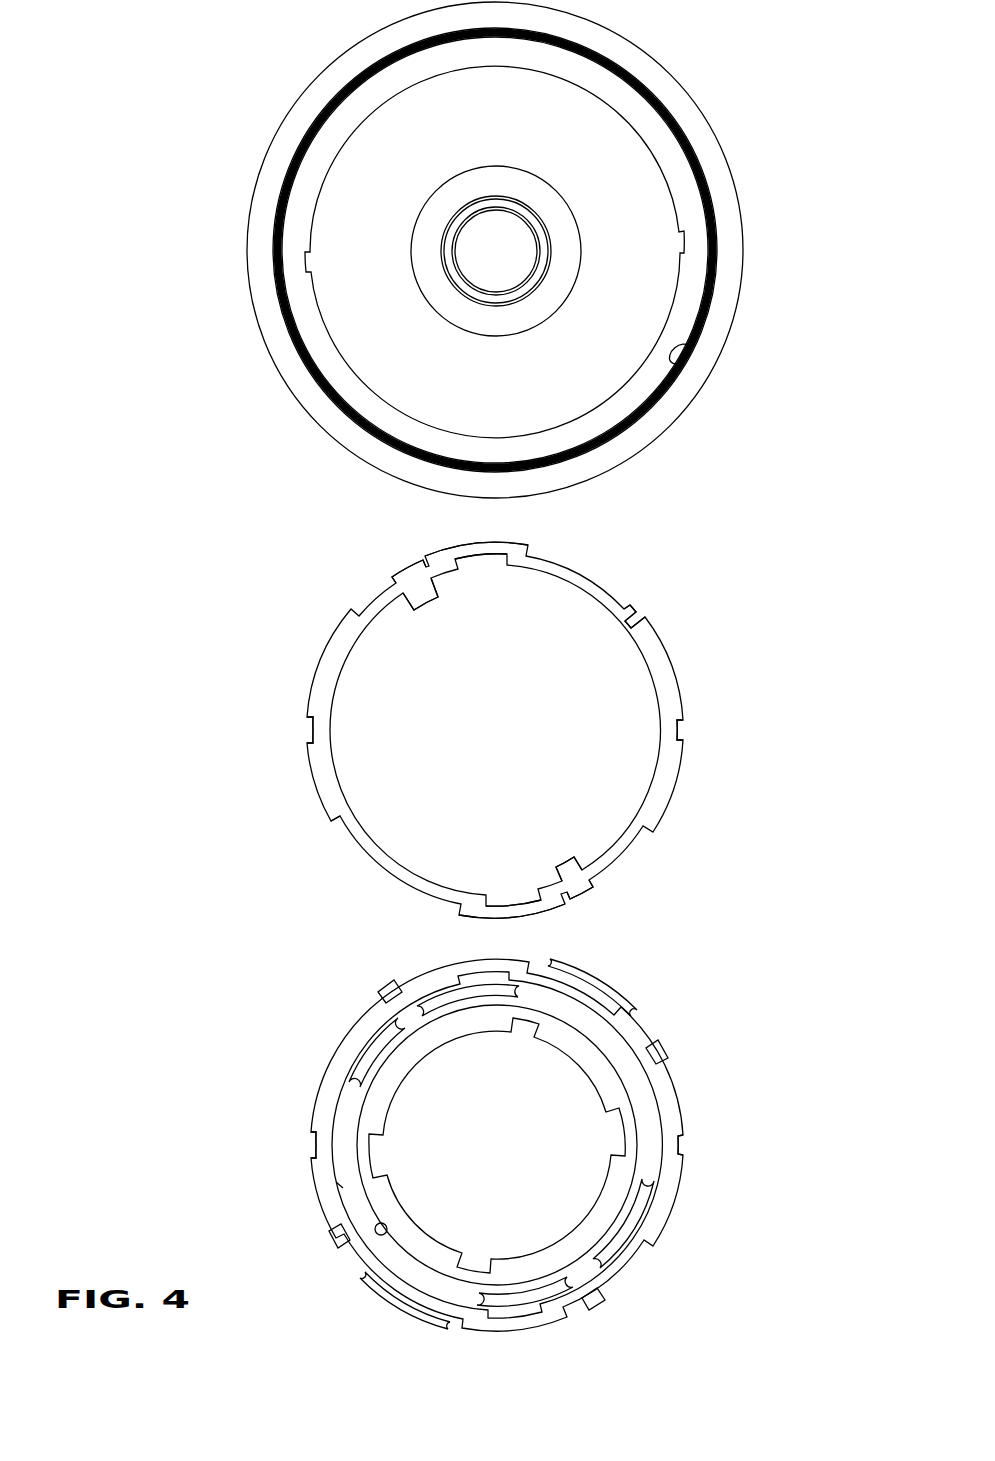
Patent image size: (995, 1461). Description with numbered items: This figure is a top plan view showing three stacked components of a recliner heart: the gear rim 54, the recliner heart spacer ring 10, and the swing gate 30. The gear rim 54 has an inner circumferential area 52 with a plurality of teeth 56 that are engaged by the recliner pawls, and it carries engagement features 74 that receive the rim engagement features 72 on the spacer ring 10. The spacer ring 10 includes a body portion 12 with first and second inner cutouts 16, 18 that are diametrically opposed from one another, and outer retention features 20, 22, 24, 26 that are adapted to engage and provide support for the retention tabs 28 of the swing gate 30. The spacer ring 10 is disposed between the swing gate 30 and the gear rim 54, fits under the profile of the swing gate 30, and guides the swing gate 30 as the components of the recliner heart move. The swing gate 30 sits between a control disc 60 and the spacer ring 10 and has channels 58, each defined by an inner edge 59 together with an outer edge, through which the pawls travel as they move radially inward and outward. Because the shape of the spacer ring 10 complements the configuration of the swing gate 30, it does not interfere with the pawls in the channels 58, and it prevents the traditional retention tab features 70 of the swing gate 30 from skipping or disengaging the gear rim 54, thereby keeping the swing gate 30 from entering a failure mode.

The recliner heart spacer ring 10 is at (744, 654).
The body portion 12 is at (663, 794).
The first inner cutout 16 is at (481, 562).
The second inner cutout 18 is at (506, 896).
The outer retention feature 20 is at (405, 576).
The outer retention feature 22 is at (660, 632).
The outer retention feature 24 is at (592, 885).
The outer retention feature 26 is at (335, 819).
The retention tabs 28 is at (393, 990).
The swing gate 30 is at (721, 1237).
The inner circumferential area 52 is at (682, 106).
The gear rim 54 is at (757, 153).
The teeth 56 is at (688, 362).
The channels 58 is at (368, 1078).
The inner edge 59 is at (387, 1236).
The control disc 60 is at (340, 1185).
The traditional retention tab features 70 is at (312, 1149).
The rim engagement features 72 is at (305, 729).
The engagement features 74 is at (307, 257).